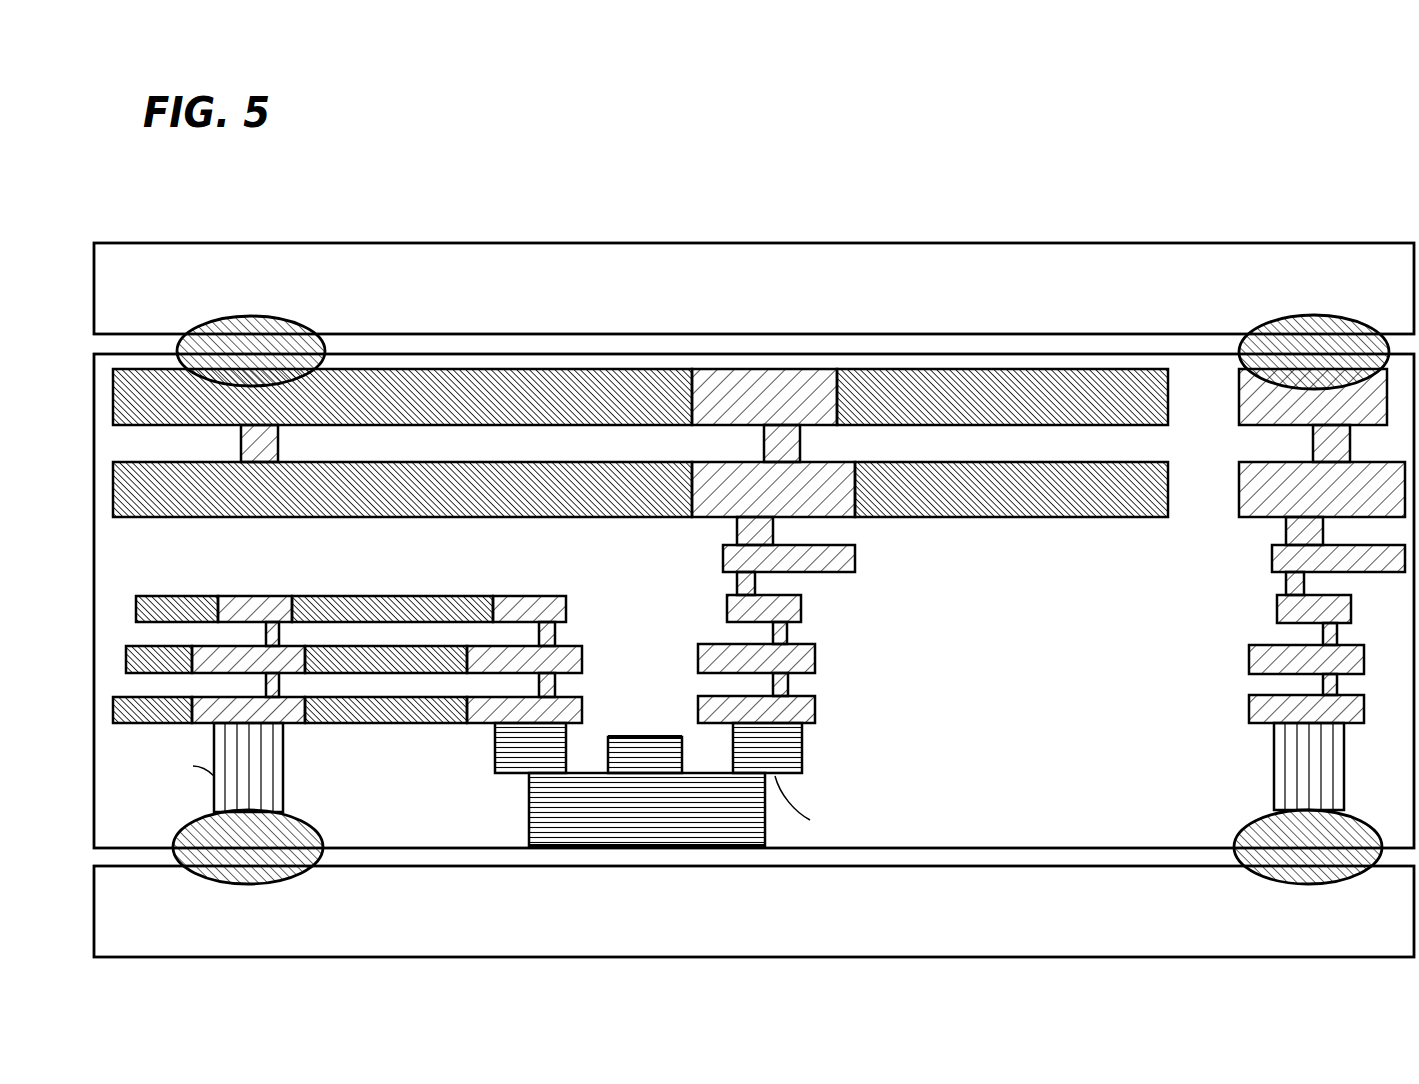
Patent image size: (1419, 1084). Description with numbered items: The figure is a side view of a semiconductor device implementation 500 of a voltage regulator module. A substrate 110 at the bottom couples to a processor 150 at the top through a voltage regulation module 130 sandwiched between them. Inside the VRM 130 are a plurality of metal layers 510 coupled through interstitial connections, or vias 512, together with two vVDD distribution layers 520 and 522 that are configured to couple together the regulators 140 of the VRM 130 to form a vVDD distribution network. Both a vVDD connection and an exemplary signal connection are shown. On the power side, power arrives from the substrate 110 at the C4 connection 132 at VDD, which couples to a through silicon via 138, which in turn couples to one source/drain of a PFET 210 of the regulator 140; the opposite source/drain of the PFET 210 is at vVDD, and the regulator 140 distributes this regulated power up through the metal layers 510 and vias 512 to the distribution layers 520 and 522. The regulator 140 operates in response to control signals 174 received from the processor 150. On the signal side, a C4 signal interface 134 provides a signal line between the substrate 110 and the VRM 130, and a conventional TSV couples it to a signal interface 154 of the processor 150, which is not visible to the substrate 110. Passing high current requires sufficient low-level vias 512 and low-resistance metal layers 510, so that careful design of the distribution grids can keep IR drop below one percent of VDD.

The semiconductor device implementation of a voltage regulator module 500 is at (1354, 160).
The processor 150 is at (793, 295).
The voltage regulation module (VRM) 130 is at (1087, 762).
The substrate 110 is at (793, 927).
The signal interface of processor 154 is at (290, 317).
The vVDD distribution layer 522 is at (1137, 428).
The vVDD distribution layer 520 is at (1137, 520).
The metal layer 510 is at (724, 558).
The via (interstitial connection) 512 is at (737, 592).
The regulator 140 is at (845, 523).
The through silicon via (TSV) 138 is at (283, 765).
The substrate power interface (C4 connection) 132 is at (304, 820).
The signal interface 134 is at (1256, 822).
The CMOS PFET 210 is at (529, 820).
The control signals 174 is at (645, 737).